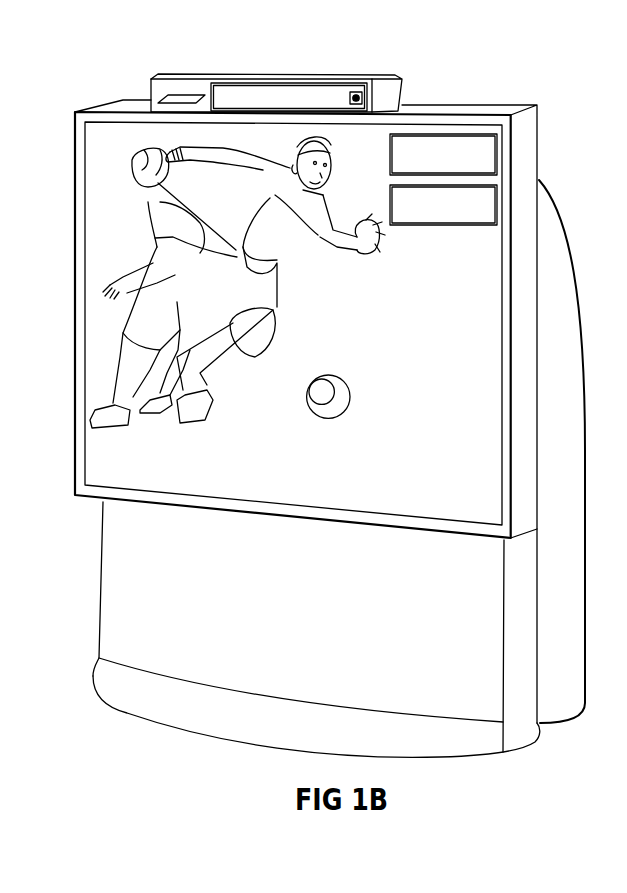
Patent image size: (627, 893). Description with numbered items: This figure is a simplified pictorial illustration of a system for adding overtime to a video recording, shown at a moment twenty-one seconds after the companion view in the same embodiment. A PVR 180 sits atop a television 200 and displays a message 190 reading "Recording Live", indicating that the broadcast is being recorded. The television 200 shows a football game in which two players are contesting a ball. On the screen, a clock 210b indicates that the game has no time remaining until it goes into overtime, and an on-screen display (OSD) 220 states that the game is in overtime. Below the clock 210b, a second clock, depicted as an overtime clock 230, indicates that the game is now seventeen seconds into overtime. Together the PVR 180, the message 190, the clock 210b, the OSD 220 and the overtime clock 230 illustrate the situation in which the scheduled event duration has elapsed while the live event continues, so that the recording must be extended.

The PVR 180 is at (378, 79).
The message 190 is at (223, 90).
The television 200 is at (527, 159).
The clock 210b is at (390, 160).
The on-screen display (OSD) 220 is at (320, 473).
The overtime clock 230 is at (448, 226).